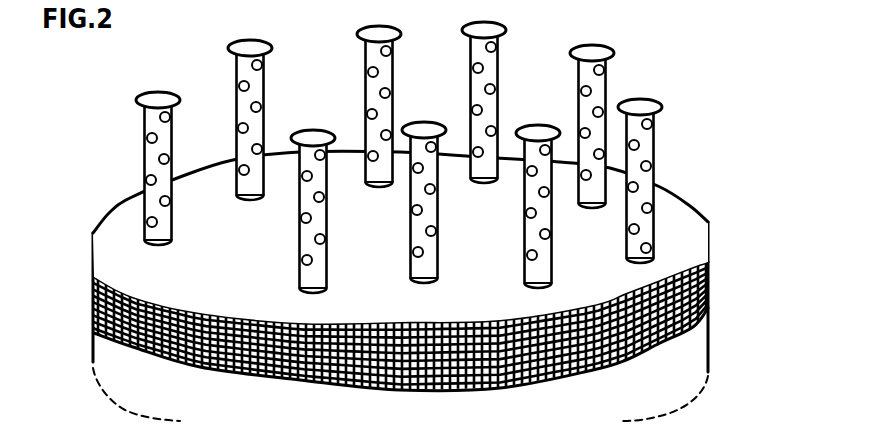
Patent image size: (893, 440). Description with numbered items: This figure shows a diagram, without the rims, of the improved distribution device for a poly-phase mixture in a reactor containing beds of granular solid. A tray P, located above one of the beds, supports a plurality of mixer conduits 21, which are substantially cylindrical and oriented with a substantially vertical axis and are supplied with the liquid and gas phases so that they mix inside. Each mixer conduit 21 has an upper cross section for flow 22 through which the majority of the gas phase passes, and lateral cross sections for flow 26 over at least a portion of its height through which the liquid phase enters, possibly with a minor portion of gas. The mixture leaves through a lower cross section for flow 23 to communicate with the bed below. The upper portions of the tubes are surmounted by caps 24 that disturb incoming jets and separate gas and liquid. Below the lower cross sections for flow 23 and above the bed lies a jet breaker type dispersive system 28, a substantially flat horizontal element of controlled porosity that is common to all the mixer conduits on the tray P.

The mixer conduit 21 is at (136, 141).
The upper cross section for flow 22 is at (639, 104).
The lower cross section for flow 23 is at (95, 236).
The cap 24 is at (603, 42).
The lateral cross section for flow 26 is at (657, 190).
The jet breaker type dispersive system 28 is at (707, 312).
The tray P is at (130, 213).